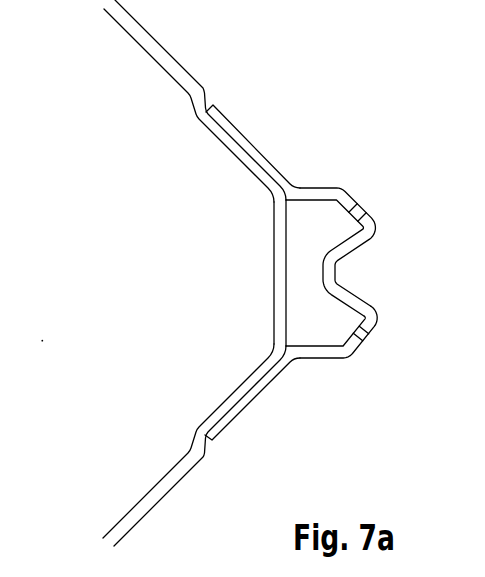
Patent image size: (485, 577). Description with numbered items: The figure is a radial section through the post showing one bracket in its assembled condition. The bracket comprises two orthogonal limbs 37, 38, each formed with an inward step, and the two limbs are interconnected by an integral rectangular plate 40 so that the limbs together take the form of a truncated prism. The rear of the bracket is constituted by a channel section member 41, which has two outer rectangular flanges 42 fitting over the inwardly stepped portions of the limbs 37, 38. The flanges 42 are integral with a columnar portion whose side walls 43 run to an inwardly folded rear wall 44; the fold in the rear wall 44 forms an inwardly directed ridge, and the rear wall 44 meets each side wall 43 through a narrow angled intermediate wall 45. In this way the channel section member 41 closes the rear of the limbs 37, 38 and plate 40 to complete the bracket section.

The limb 37 is at (150, 505).
The limb 38 is at (147, 41).
The rectangular plate 40 is at (276, 312).
The channel section member 41 is at (366, 263).
The rectangular flange 42 is at (247, 148).
The side wall 43 is at (320, 190).
The rear wall 44 is at (332, 257).
The intermediate wall 45 is at (372, 218).